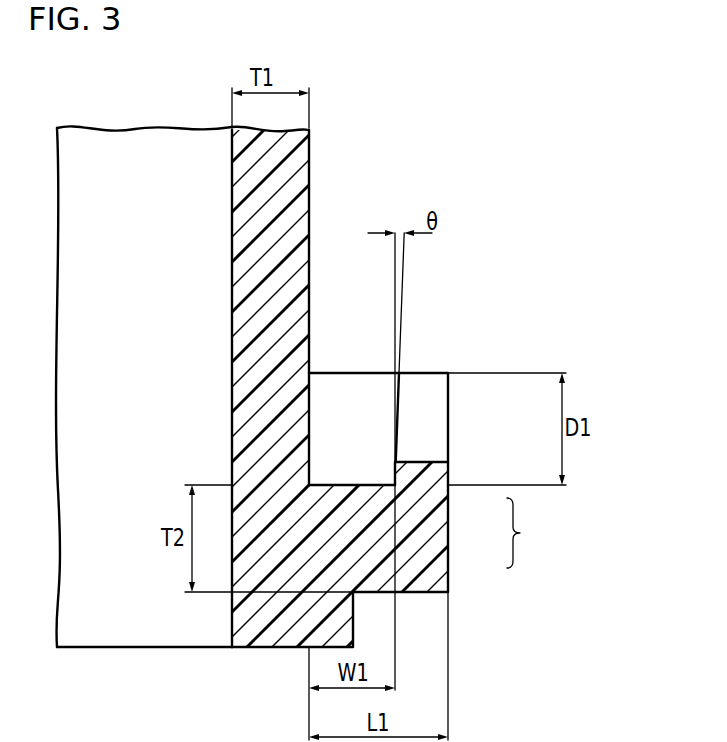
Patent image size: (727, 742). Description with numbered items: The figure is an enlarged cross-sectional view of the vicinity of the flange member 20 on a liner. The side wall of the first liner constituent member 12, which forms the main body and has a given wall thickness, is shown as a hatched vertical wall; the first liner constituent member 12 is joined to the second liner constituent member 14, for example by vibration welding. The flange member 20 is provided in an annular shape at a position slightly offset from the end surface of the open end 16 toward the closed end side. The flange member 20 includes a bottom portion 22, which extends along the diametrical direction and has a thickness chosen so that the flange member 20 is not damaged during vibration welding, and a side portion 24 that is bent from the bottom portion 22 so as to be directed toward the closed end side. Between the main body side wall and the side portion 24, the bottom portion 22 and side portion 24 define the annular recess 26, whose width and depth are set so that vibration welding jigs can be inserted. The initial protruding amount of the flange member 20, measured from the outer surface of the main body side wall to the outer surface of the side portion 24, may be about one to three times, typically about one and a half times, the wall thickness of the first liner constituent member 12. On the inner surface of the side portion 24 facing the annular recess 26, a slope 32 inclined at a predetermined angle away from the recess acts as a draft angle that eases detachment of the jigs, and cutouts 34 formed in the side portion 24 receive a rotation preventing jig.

The first liner constituent member 12 is at (144, 358).
The second liner constituent member 14 is at (58, 387).
The open end 16 is at (259, 648).
The flange member 20 is at (526, 533).
The bottom portion 22 is at (437, 560).
The side portion 24 is at (440, 435).
The annular recess 26 is at (348, 484).
The slope 32 is at (398, 387).
The cutouts 34 is at (428, 385).